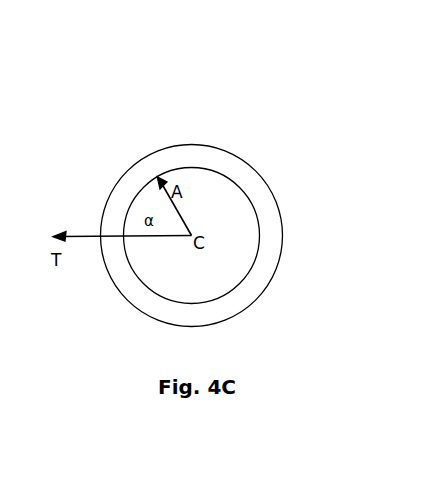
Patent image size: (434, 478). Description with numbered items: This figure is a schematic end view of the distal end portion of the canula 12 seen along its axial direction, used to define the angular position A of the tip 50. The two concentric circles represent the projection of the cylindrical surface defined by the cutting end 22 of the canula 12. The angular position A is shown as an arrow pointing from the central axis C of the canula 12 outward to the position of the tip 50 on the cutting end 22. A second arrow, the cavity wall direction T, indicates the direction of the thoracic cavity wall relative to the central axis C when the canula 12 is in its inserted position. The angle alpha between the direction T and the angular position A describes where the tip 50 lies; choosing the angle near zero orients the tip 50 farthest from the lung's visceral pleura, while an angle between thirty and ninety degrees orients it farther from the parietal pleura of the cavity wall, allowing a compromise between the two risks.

The canula 12 is at (215, 114).
The cutting end 22 is at (254, 177).
The tip 50 is at (156, 176).